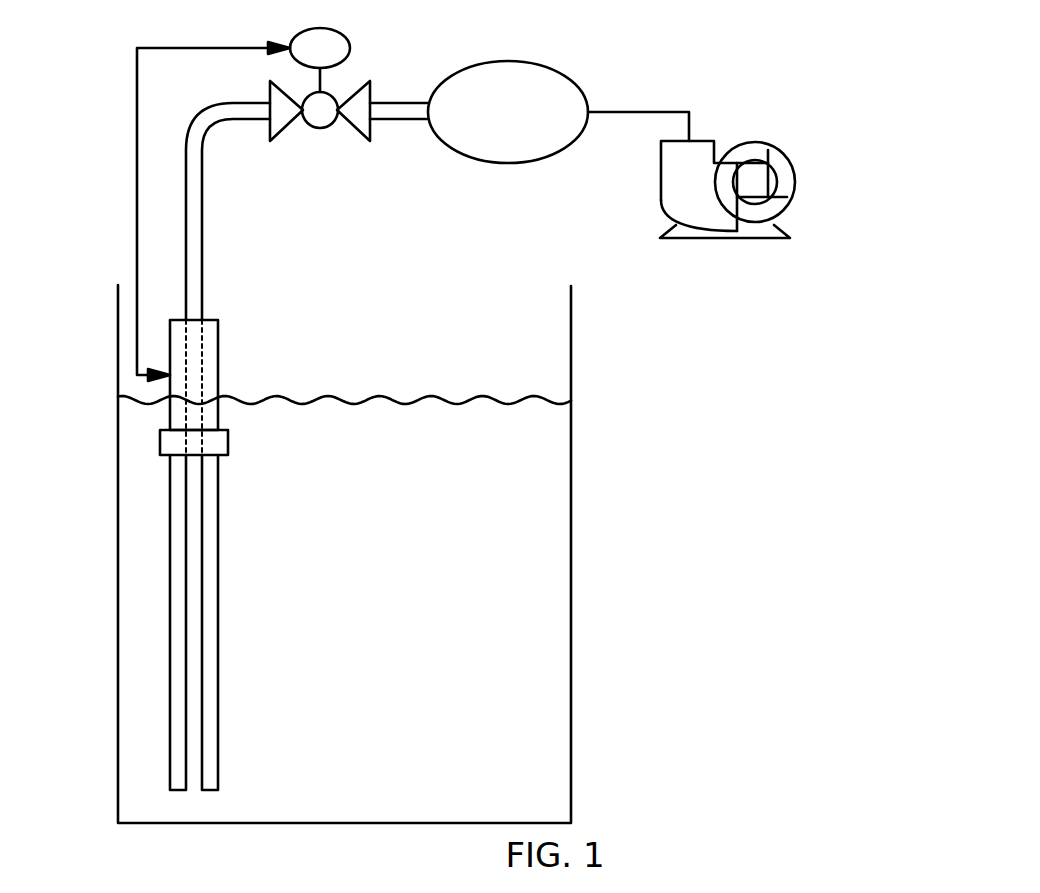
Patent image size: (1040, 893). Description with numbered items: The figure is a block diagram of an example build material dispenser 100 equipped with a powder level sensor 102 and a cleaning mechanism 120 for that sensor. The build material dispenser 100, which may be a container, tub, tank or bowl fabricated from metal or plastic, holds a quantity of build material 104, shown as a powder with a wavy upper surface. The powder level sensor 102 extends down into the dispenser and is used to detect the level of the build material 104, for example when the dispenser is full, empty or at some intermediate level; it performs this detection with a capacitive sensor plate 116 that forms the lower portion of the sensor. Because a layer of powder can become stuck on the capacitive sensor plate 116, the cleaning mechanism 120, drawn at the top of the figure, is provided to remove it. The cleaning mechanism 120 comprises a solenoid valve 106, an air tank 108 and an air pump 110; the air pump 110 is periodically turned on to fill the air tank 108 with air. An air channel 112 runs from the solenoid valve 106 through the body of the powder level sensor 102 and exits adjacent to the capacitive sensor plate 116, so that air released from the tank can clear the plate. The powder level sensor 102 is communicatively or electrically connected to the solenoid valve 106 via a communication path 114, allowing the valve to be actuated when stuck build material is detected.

The build material dispenser 100 is at (572, 431).
The powder level sensor 102 is at (219, 335).
The build material 104 is at (425, 395).
The solenoid valve 106 is at (320, 84).
The air tank 108 is at (558, 112).
The air pump 110 is at (786, 150).
The air channel 112 is at (203, 250).
The communication path 114 is at (168, 52).
The capacitive sensor plate 116 is at (219, 651).
The cleaning mechanism 120 is at (897, 20).